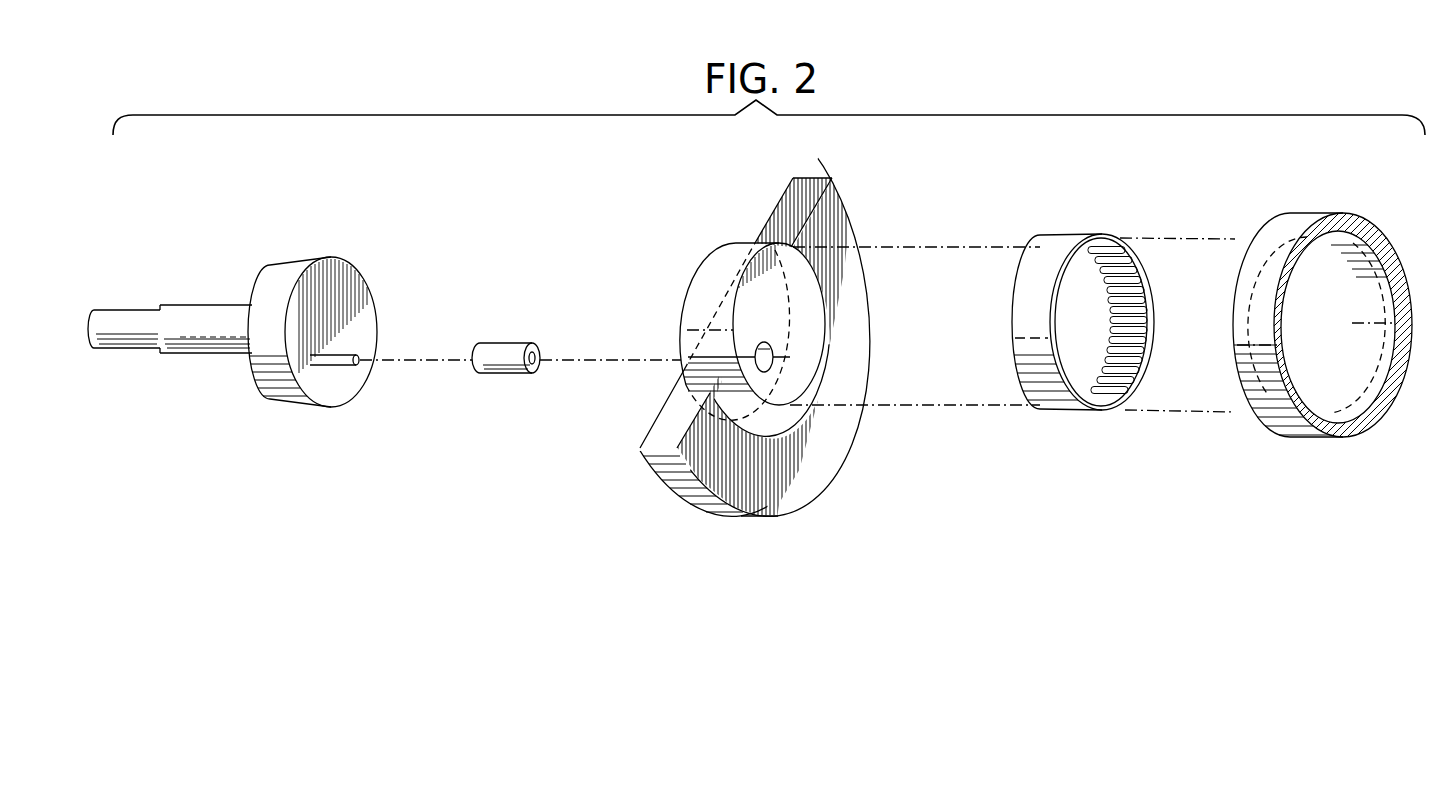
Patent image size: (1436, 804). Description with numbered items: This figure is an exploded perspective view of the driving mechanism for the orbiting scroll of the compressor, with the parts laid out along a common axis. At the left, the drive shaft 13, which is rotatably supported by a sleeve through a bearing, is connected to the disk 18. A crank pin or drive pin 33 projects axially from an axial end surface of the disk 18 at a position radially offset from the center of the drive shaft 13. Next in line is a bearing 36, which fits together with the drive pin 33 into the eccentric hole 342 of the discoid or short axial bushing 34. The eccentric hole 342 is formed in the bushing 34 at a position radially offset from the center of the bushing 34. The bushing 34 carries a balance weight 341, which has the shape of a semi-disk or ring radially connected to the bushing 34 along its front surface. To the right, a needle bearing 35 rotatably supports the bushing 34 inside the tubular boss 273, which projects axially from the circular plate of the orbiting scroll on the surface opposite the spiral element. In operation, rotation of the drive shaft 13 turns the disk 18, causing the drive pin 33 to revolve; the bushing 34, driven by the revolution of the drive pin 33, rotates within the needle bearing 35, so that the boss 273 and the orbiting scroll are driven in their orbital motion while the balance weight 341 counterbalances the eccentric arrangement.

The drive shaft 13 is at (138, 306).
The disk 18 is at (290, 268).
The drive pin 33 is at (340, 353).
The bearing 36 is at (512, 341).
The bushing 34 is at (725, 256).
The eccentric hole 342 is at (764, 343).
The balance weight 341 is at (812, 468).
The needle bearing 35 is at (1060, 248).
The tubular boss 273 is at (1299, 222).